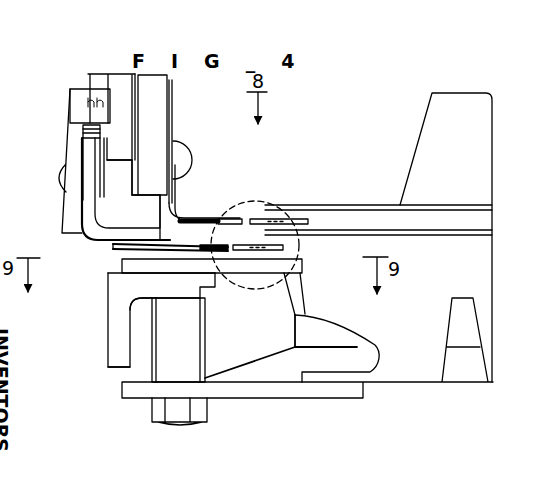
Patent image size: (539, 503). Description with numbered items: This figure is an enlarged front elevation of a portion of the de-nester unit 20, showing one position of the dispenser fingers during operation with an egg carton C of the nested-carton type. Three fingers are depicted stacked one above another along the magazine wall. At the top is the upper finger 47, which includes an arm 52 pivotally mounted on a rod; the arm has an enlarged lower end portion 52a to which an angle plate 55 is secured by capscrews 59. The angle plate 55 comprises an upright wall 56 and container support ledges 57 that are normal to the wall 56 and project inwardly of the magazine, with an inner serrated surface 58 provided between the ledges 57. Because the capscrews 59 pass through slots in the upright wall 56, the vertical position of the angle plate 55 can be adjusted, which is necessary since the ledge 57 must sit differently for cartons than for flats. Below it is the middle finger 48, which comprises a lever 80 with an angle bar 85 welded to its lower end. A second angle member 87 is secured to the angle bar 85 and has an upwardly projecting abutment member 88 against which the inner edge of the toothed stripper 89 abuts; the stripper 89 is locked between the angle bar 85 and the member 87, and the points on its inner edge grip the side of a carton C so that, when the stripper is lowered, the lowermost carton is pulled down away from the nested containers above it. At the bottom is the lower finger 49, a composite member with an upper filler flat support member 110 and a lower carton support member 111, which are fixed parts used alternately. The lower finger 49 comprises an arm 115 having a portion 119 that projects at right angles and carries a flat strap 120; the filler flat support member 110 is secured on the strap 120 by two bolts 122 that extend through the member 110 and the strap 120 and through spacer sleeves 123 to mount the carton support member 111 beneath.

The de-nester unit 20 is at (96, 70).
The lever 80 is at (90, 79).
The middle finger 48 is at (70, 126).
The angle bar 85 is at (82, 223).
The second angle member 87 is at (82, 242).
The abutment member 88 is at (113, 246).
The arm 52 is at (153, 110).
The upper finger 47 is at (172, 87).
The angle plate 55 is at (173, 122).
The enlarged lower end portion of the arm 52a is at (153, 144).
The capscrews 59 is at (182, 164).
The upright wall 56 is at (173, 179).
The inner serrated surface 58 is at (236, 199).
The container support ledges 57 is at (298, 217).
The cartons C is at (332, 206).
The toothed stripper 89 is at (282, 272).
The filler flat support member 110 is at (278, 275).
The carton support member 111 is at (352, 388).
The arm 115 is at (115, 302).
The portion of arm 119 is at (108, 320).
The lower finger 49 is at (110, 342).
The flat strap 120 is at (206, 291).
The spacer sleeves 123 is at (190, 345).
The bolts 122 is at (198, 424).